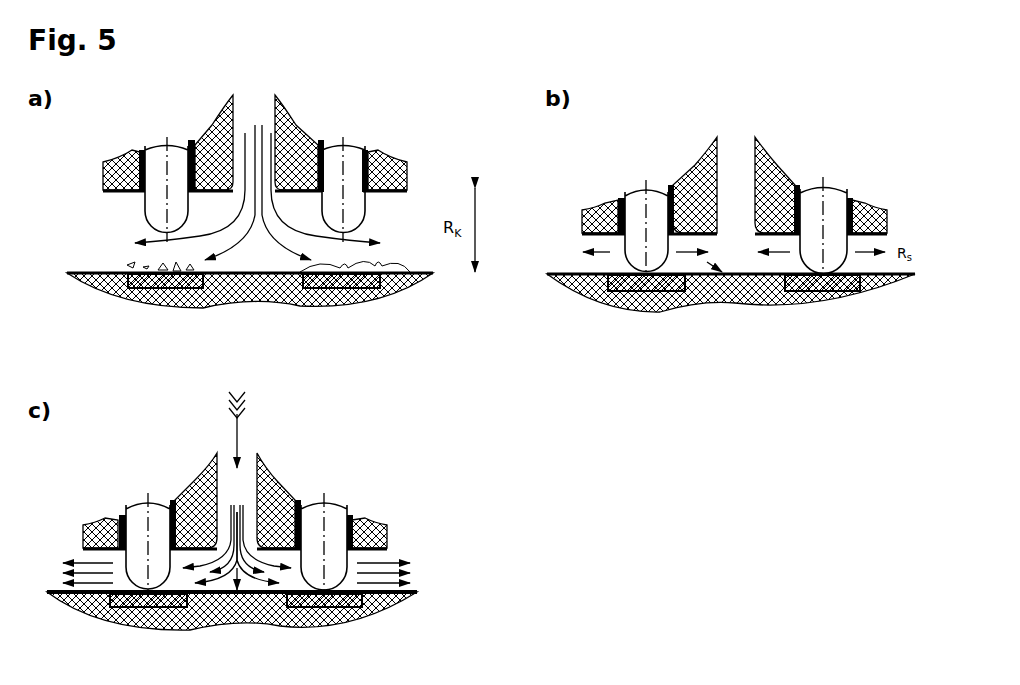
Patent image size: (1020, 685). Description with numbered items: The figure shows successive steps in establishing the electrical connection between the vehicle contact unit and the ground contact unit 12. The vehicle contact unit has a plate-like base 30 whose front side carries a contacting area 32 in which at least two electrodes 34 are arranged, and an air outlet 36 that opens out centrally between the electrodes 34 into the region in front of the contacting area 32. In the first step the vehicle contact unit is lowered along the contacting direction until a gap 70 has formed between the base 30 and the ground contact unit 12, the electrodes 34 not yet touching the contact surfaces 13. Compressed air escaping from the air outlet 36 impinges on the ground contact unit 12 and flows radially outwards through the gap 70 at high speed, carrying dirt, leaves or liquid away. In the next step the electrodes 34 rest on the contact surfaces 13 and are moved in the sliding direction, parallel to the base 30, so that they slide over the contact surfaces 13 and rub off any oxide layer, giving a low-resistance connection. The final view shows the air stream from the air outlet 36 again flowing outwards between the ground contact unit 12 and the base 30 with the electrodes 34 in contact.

In FIG. 5a, the ground contact unit 12 is at (250, 309).
In FIG. 5b, the ground contact unit 12 is at (730, 318).
In FIG. 5c, the ground contact unit 12 is at (232, 630).
In FIG. 5a, the contact surfaces 13 is at (254, 309).
In FIG. 5b, the contact surfaces 13 is at (734, 318).
In FIG. 5c, the contact surfaces 13 is at (274, 631).
In FIG. 5a, the base 30 is at (218, 143).
In FIG. 5b, the base 30 is at (750, 175).
In FIG. 5c, the base 30 is at (235, 491).
In FIG. 5a, the contacting area 32 is at (130, 197).
In FIG. 5b, the contacting area 32 is at (734, 273).
In FIG. 5a, the electrodes 34 is at (236, 155).
In FIG. 5b, the electrodes 34 is at (771, 218).
In FIG. 5c, the electrodes 34 is at (266, 534).
In FIG. 5a, the air outlet 36 is at (266, 161).
In FIG. 5b, the air outlet 36 is at (771, 139).
In FIG. 5c, the air outlet 36 is at (236, 530).
In FIG. 5a, the gap 70 is at (130, 223).